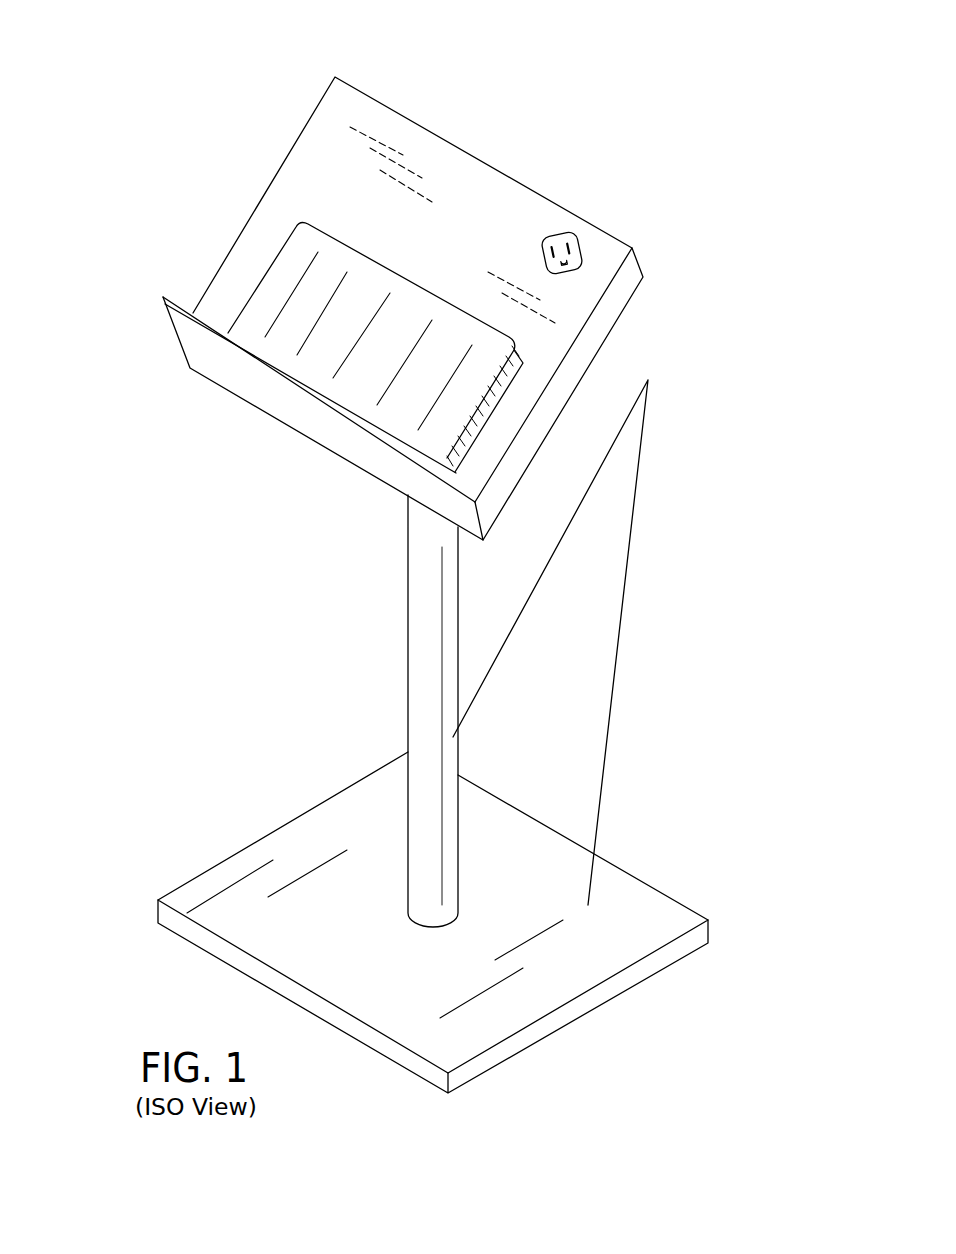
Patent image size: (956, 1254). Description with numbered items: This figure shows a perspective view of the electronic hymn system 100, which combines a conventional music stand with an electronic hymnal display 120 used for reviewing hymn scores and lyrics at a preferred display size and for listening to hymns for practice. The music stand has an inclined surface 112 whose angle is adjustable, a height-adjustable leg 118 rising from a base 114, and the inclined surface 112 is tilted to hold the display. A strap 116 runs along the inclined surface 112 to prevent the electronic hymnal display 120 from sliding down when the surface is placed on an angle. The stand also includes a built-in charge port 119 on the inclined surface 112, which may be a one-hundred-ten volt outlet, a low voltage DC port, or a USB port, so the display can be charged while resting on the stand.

The electronic hymn system 100 is at (165, 728).
The inclined surface 112 is at (323, 127).
The base 114 is at (587, 977).
The strap 116 is at (192, 337).
The height-adjustable leg 118 is at (433, 670).
The built-in charge port 119 is at (567, 243).
The electronic hymnal display 120 is at (477, 430).